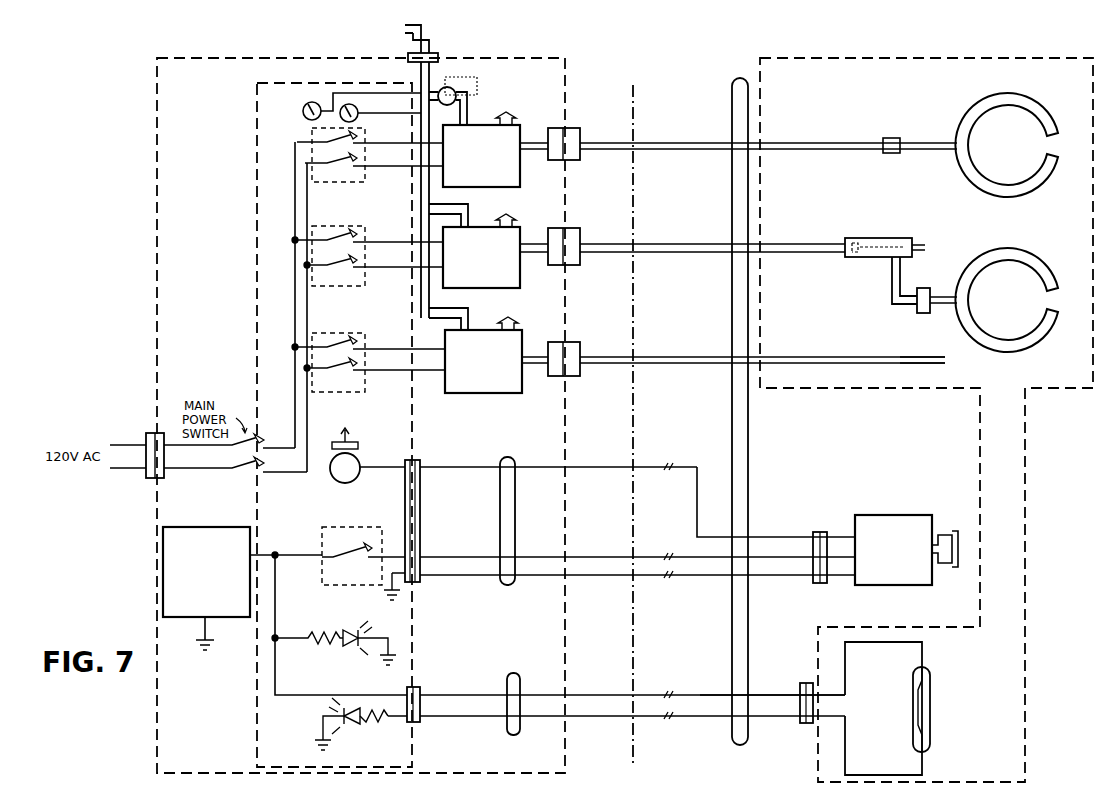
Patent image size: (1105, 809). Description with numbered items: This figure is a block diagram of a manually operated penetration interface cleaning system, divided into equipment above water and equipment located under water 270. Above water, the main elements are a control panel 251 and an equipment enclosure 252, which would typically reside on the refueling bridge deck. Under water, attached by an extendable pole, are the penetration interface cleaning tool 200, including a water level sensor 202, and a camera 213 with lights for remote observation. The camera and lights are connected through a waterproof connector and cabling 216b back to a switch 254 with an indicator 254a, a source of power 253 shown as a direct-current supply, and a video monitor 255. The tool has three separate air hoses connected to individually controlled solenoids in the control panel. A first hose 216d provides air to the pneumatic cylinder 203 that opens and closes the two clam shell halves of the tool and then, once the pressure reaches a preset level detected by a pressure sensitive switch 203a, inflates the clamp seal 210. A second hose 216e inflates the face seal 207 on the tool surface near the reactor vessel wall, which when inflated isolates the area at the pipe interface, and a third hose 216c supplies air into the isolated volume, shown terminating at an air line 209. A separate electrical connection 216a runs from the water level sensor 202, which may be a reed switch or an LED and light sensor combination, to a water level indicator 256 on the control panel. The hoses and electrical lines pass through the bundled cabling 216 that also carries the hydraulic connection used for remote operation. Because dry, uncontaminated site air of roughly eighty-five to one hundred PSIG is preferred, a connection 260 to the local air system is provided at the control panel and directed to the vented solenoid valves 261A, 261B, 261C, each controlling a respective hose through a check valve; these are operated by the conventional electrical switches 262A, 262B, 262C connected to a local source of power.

The penetration interface cleaning tool 200 is at (1013, 58).
The water level sensor 202 is at (930, 690).
The pneumatic cylinder 203 is at (887, 237).
The pressure sensitive switch 203a is at (940, 278).
The face seal 207 is at (980, 112).
The air line 209 is at (942, 356).
The clamp seal 210 is at (1040, 274).
The camera 213 is at (896, 515).
The bundled cabling 216 is at (731, 412).
The electrical connection 216a is at (717, 693).
The camera cable 216b is at (697, 490).
The third hose 216c is at (702, 352).
The first hose 216d is at (702, 246).
The second hose 216e is at (702, 141).
The control panel 251 is at (256, 170).
The equipment enclosure 252 is at (156, 135).
The source of power 253 is at (206, 526).
The switch 254 is at (351, 527).
The indicator 254a is at (345, 650).
The video monitor 255 is at (360, 440).
The water level indicator 256 is at (358, 738).
The connection 260 is at (436, 53).
The solenoid valve A 261A is at (512, 187).
The solenoid valve B 261B is at (512, 289).
The solenoid valve C 261C is at (514, 394).
The vented solenoid 262A is at (362, 182).
The vented solenoid 262B is at (364, 286).
The vented solenoid 262C is at (372, 372).
The under water equipment 270 is at (912, 48).